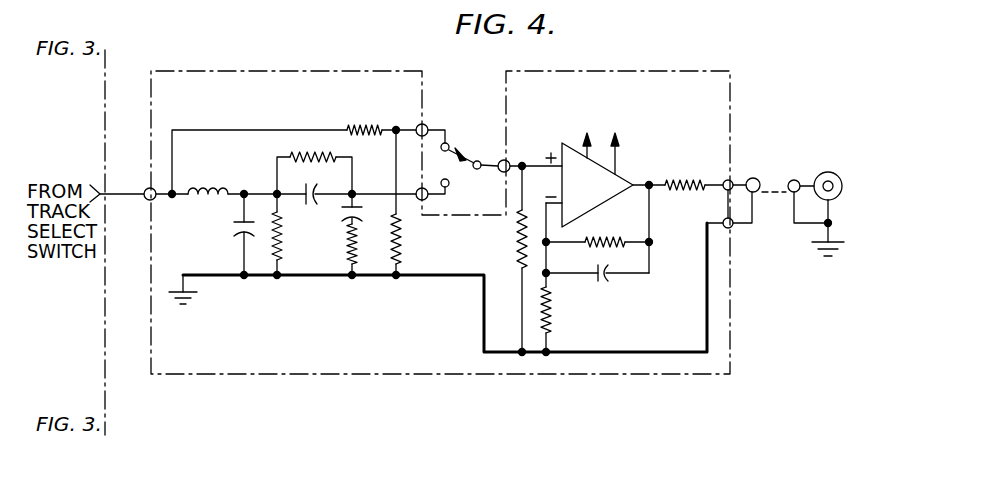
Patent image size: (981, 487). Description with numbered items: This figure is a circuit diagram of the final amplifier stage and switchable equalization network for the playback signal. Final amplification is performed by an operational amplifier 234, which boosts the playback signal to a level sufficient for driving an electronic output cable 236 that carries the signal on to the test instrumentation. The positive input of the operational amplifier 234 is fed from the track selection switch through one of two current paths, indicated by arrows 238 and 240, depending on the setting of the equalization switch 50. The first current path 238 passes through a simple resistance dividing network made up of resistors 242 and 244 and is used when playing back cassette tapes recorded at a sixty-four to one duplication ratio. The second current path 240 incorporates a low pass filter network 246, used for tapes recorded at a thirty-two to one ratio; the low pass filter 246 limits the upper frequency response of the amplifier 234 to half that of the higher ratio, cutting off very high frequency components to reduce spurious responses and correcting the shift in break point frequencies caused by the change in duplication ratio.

The first current path 238 is at (164, 153).
The second current path 240 is at (194, 209).
The resistor 242 is at (352, 128).
The resistor 244 is at (401, 240).
The low pass filter network 246 is at (314, 254).
The equalization switch 50 is at (464, 157).
The operational amplifier 234 is at (608, 197).
The electronic output cable 236 is at (770, 180).